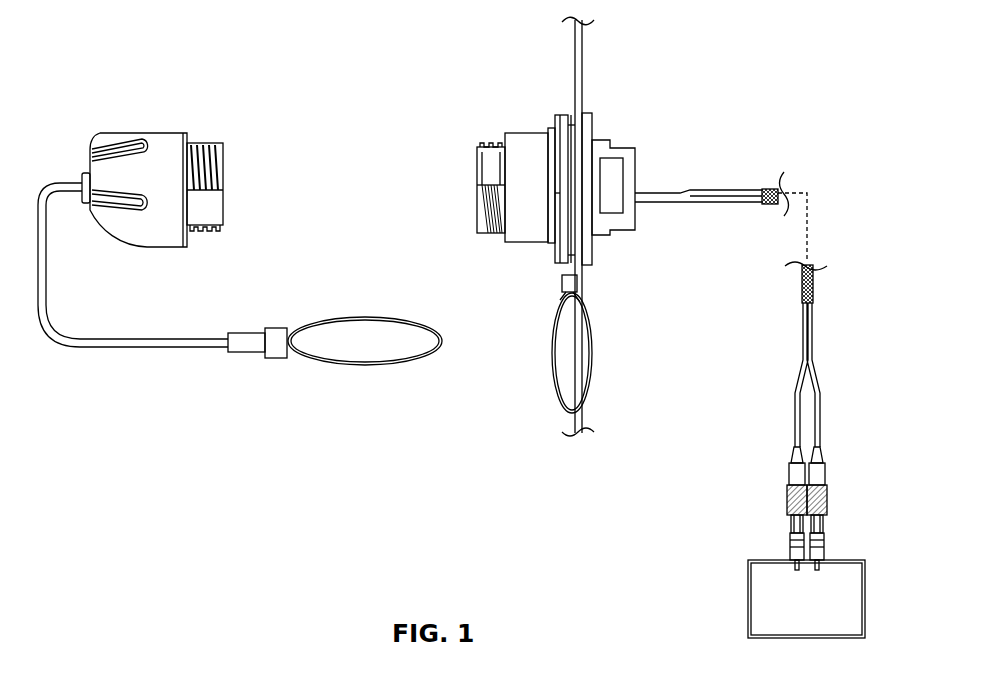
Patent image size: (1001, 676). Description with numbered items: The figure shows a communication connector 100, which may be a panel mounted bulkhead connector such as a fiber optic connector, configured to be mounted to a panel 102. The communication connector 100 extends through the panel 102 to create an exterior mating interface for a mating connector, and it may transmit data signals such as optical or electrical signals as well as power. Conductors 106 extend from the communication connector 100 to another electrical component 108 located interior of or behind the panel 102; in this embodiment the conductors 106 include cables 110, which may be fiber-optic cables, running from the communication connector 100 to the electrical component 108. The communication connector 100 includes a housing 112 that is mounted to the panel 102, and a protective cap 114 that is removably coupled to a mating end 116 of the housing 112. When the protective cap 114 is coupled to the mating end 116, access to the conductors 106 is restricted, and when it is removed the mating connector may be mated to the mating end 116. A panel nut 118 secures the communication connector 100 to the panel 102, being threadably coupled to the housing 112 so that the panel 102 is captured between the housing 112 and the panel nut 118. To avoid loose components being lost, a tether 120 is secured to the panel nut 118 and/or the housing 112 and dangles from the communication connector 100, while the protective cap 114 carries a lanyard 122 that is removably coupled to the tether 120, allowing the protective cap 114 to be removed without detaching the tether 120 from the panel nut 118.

The communication connector 100 is at (420, 46).
The panel 102 is at (583, 48).
The conductors 106 is at (757, 176).
The electrical component 108 is at (762, 588).
The cables 110 is at (708, 192).
The housing 112 is at (609, 127).
The protective cap 114 is at (116, 130).
The mating end 116 is at (464, 151).
The panel nut 118 is at (562, 250).
The tether 120 is at (563, 310).
The lanyard 122 is at (155, 347).